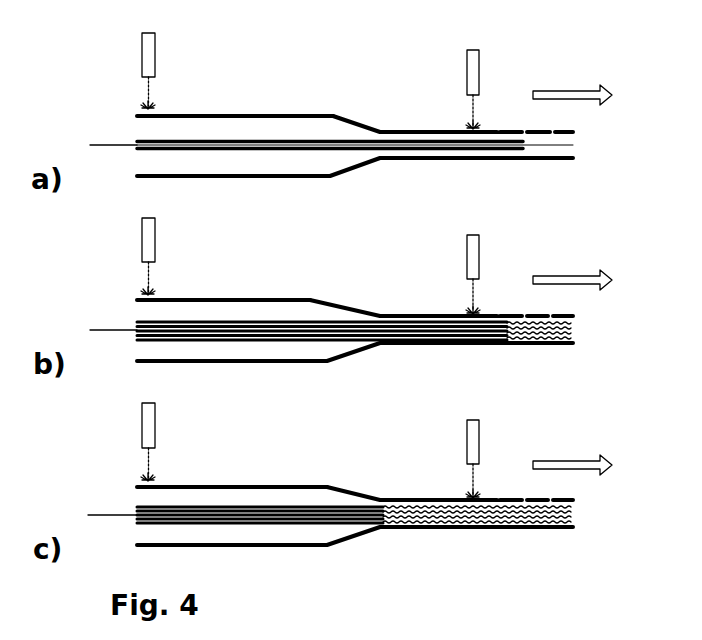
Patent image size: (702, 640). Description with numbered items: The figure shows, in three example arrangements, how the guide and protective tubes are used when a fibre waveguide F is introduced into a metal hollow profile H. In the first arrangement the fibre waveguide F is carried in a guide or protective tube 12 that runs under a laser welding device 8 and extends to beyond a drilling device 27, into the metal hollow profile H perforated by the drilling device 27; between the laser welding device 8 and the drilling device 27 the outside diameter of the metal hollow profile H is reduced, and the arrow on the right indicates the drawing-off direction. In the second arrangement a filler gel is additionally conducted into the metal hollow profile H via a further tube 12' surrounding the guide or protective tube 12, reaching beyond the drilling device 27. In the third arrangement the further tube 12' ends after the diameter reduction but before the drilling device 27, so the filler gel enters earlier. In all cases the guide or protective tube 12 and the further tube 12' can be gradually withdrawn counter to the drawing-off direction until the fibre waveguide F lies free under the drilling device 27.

The laser welding device 8 is at (138, 58).
The drilling device 27 is at (465, 72).
The guide or protective tube 12 is at (355, 301).
The further tube 12' is at (435, 384).
The metal hollow profile H is at (260, 111).
The fibre waveguide F is at (122, 142).